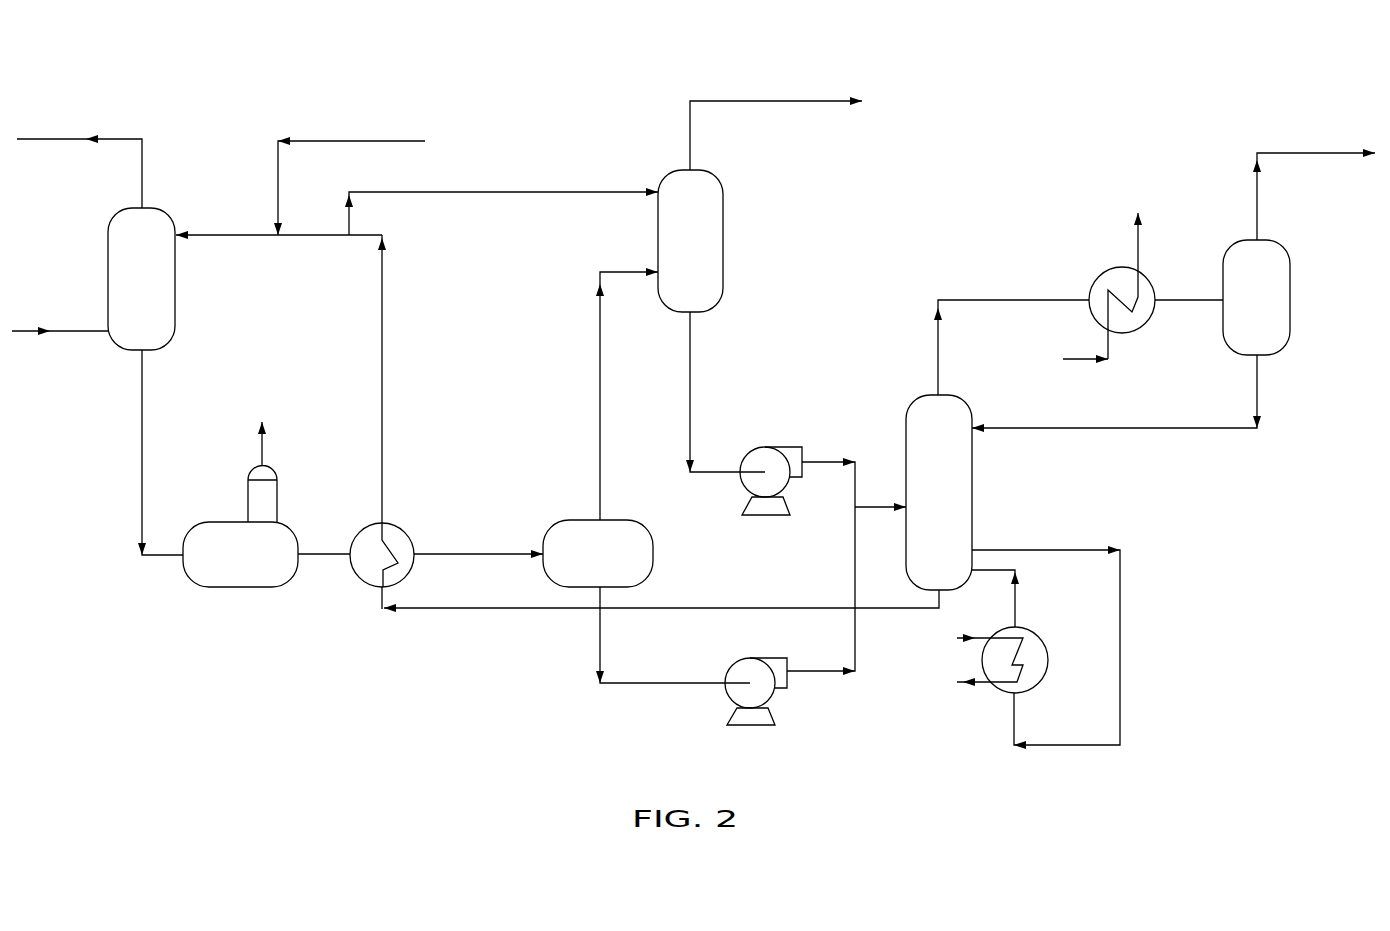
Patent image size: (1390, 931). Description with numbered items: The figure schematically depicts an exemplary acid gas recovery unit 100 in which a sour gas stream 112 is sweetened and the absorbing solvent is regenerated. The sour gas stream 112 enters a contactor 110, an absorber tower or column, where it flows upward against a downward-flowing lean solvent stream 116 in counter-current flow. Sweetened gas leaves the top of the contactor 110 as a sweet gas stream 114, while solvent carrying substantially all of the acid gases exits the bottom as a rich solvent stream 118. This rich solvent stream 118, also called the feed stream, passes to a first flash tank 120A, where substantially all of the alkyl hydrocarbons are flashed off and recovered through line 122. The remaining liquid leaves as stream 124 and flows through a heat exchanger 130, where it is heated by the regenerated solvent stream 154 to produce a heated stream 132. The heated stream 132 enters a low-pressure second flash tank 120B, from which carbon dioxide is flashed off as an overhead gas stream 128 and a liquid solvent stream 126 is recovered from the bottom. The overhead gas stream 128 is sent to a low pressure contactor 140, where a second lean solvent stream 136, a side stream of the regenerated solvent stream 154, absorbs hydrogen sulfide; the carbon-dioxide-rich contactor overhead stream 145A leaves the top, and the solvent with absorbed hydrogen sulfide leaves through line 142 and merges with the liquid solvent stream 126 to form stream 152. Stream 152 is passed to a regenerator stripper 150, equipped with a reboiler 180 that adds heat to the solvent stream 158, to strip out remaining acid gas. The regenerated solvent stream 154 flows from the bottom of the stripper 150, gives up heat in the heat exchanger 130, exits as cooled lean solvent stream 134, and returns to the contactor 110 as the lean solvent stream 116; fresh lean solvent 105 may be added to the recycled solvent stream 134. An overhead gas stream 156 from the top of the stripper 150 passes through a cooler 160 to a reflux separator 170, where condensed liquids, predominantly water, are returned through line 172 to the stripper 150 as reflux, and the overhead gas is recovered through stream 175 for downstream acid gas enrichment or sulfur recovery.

The acid gas recovery unit 100 is at (238, 737).
The fresh lean solvent 105 is at (343, 140).
The contactor 110 is at (108, 257).
The sour gas stream 112 is at (77, 333).
The sweet gas stream 114 is at (80, 138).
The lean solvent stream 116 is at (228, 234).
The rich solvent stream 118 is at (144, 420).
The first flash tank 120A is at (237, 589).
The second flash tank 120B is at (653, 550).
The line 122 is at (263, 450).
The stream 124 is at (325, 557).
The liquid solvent stream 126 is at (602, 630).
The overhead gas stream 128 is at (598, 410).
The heat exchanger 130 is at (410, 533).
The heated stream 132 is at (493, 552).
The cooled lean solvent stream 134 is at (384, 360).
The second lean solvent stream 136 is at (490, 194).
The low pressure contactor 140 is at (723, 236).
The line 142 is at (692, 370).
The contactor overhead stream 145A is at (768, 100).
The regenerator stripper 150 is at (972, 492).
The liquid solvent stream 152 is at (875, 503).
The regenerated solvent stream 154 is at (827, 607).
The overhead gas stream 156 is at (980, 297).
The solvent stream 158 is at (1082, 547).
The cooler 160 is at (1100, 275).
The reflux separator 170 is at (1290, 300).
The line 172 is at (1173, 430).
The stream 175 is at (1315, 163).
The reboiler 180 is at (1030, 628).